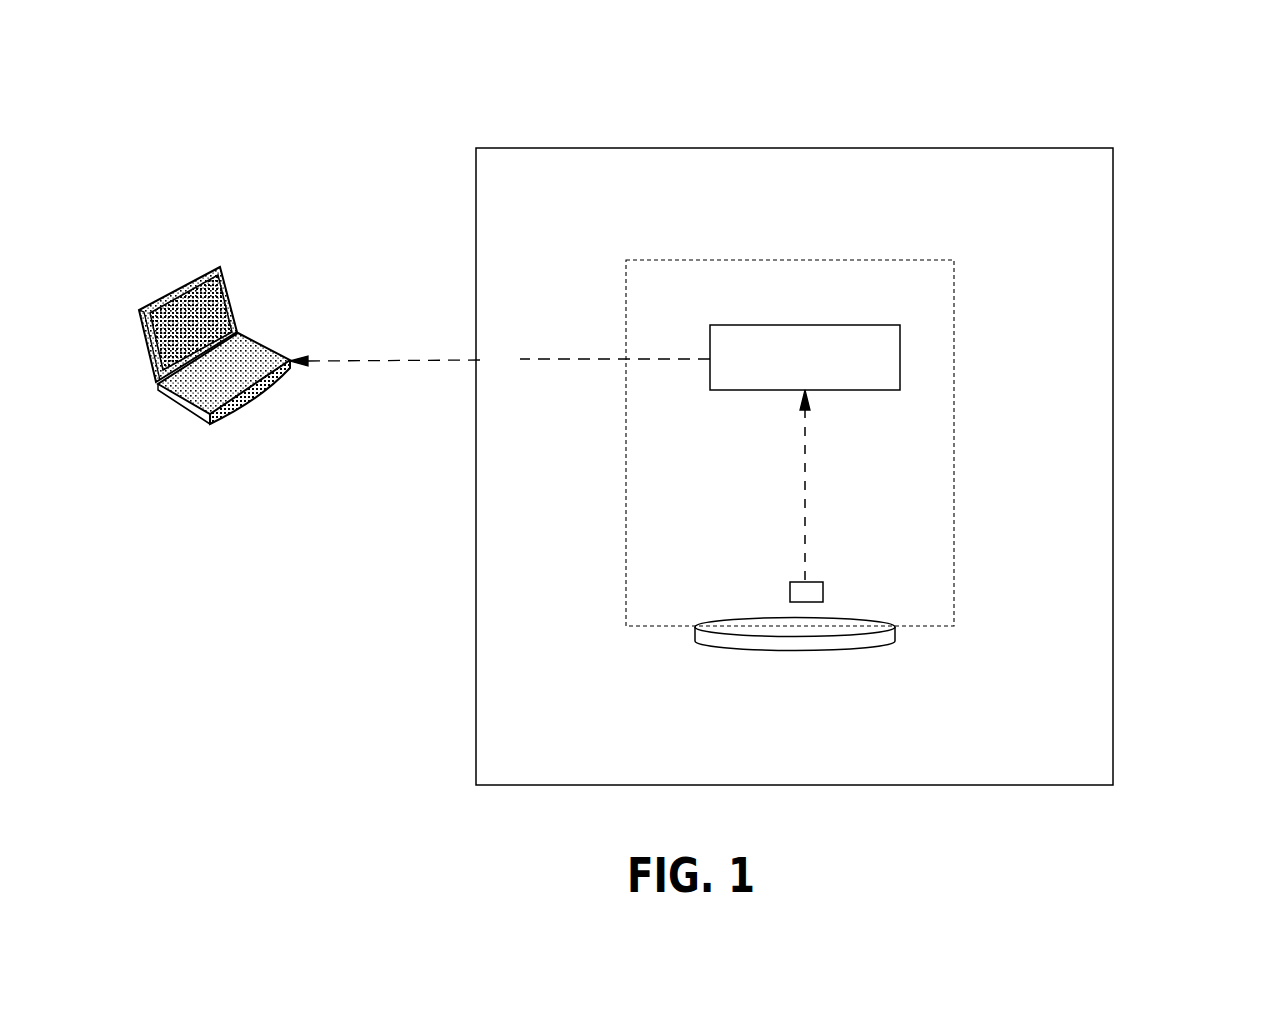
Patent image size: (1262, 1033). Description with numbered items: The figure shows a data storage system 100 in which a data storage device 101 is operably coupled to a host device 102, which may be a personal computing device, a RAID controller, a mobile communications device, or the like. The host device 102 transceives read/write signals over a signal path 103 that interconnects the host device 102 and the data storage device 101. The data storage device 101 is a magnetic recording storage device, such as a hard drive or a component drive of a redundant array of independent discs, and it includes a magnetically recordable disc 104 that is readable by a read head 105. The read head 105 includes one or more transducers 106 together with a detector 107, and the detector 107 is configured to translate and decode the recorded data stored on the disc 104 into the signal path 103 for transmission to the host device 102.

The data storage system 100 is at (1156, 80).
The data storage device 101 is at (794, 466).
The host device 102 is at (214, 386).
The signal path 103 is at (500, 359).
The magnetically recordable disc 104 is at (747, 633).
The read head 105 is at (625, 545).
The transducer 106 is at (807, 587).
The detector 107 is at (805, 357).